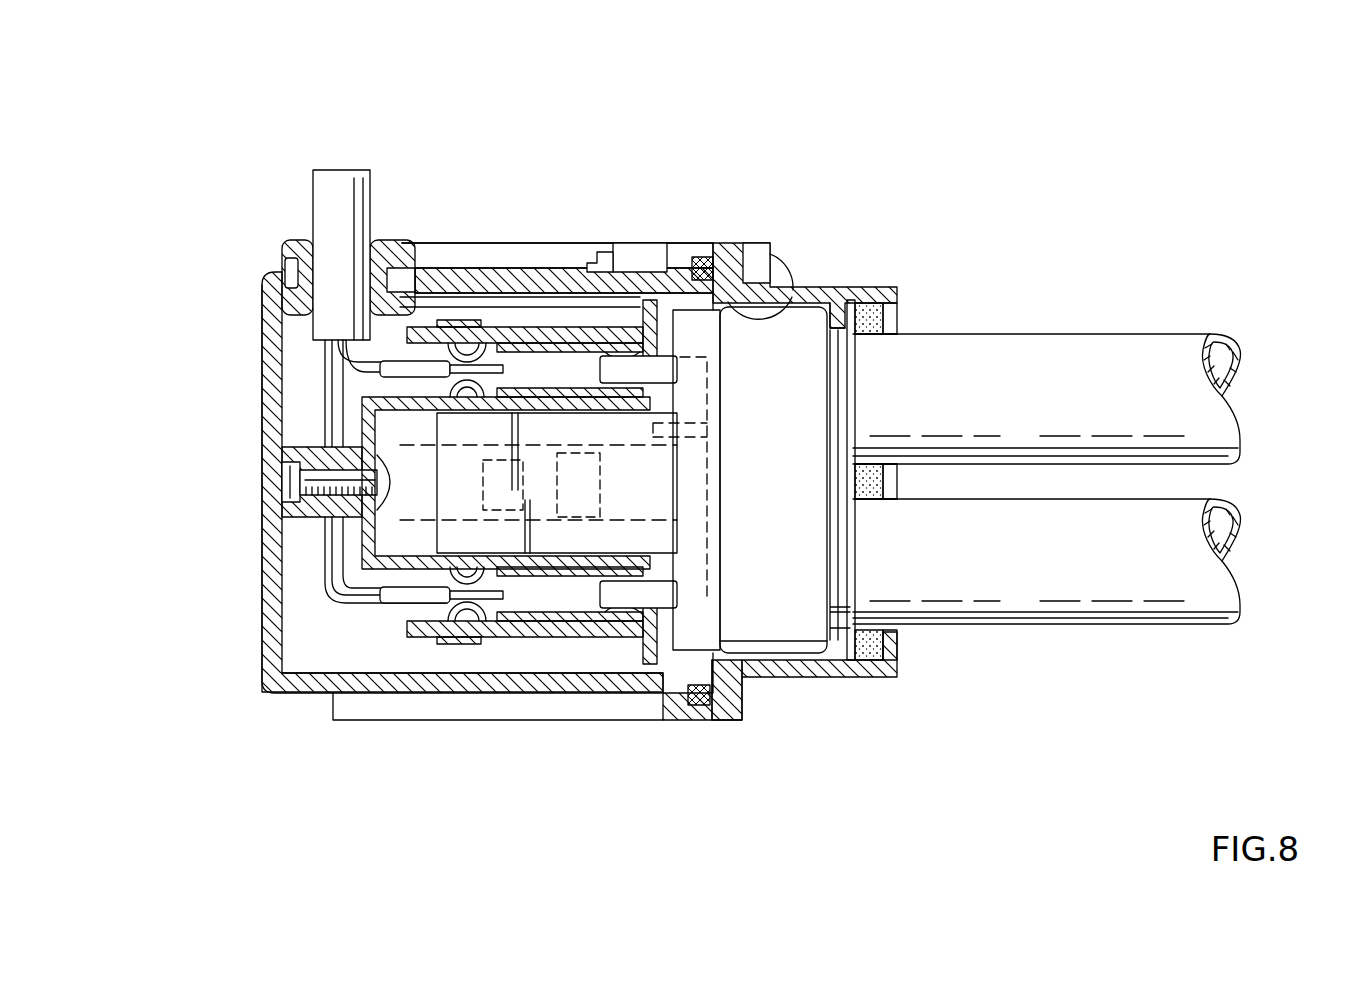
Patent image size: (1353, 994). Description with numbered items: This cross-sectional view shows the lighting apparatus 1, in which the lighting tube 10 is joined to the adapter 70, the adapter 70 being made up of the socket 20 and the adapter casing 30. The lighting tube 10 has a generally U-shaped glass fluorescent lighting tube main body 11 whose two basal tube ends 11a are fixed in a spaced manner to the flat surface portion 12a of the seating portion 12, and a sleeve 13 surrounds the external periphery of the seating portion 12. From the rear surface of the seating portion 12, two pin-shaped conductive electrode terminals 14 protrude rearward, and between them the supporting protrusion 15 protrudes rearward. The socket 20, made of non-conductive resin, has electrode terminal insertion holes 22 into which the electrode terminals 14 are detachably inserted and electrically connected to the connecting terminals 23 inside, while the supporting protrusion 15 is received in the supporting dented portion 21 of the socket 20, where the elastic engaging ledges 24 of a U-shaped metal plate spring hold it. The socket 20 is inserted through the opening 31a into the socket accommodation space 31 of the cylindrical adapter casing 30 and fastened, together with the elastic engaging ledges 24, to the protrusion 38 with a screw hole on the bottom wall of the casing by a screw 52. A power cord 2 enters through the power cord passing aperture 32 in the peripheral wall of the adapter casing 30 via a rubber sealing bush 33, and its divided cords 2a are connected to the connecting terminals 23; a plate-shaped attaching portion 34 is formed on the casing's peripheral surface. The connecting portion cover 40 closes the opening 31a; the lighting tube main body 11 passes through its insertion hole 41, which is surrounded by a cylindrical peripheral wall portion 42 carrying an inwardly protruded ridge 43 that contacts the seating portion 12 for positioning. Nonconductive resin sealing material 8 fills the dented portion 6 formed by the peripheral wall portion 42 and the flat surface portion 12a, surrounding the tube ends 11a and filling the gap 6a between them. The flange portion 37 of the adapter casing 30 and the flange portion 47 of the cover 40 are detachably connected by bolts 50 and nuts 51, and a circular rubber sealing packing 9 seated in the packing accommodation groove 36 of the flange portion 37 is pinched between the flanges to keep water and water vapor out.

The lighting apparatus 1 is at (1006, 153).
The power cord 2 is at (330, 195).
The divided cords 2a is at (340, 390).
The dented portion 6 is at (880, 318).
The gap 6a is at (890, 480).
The sealing material 8 is at (880, 334).
The sealing packing 9 is at (748, 693).
The lighting tube 10 is at (1120, 365).
The lighting tube main body 11 is at (1115, 605).
The tube ends 11a is at (870, 395).
The seating portion 12 is at (700, 477).
The flat surface portion 12a is at (852, 445).
The sleeve 13 is at (763, 560).
The electrode terminals 14 is at (578, 362).
The supporting protrusion 15 is at (355, 545).
The socket 20 is at (465, 296).
The supporting dented portion 21 is at (400, 405).
The electrode terminal insertion holes 22 is at (518, 370).
The connecting terminal 23 is at (562, 343).
The elastic engaging ledges 24 is at (390, 440).
The adapter casing 30 is at (436, 250).
The socket accommodation space 31 is at (310, 640).
The opening 31a is at (682, 250).
The power cord passing aperture 32 is at (287, 275).
The rubber sealing bush 33 is at (290, 252).
The attaching portion 34 is at (372, 712).
The packing accommodation groove 36 is at (698, 696).
The flange portion 37 is at (704, 705).
The protrusion with a screw hole 38 is at (300, 495).
The connecting portion cover 40 is at (850, 265).
The insertion hole 41 is at (800, 283).
The peripheral wall portion 42 is at (880, 300).
The protruded ridge 43 is at (850, 300).
The flange portion 47 is at (737, 718).
The bolts 50 is at (792, 260).
The nuts 51 is at (598, 262).
The screw 52 is at (310, 537).
The adapter 70 is at (512, 118).